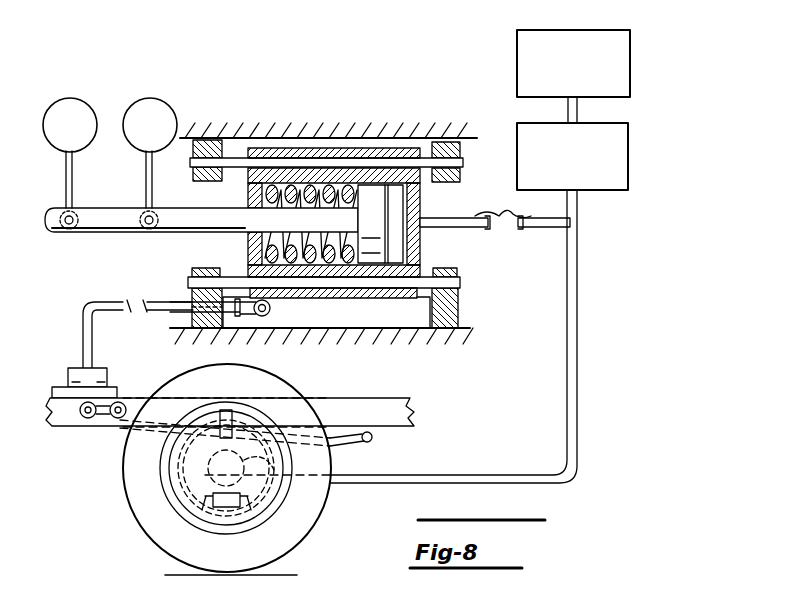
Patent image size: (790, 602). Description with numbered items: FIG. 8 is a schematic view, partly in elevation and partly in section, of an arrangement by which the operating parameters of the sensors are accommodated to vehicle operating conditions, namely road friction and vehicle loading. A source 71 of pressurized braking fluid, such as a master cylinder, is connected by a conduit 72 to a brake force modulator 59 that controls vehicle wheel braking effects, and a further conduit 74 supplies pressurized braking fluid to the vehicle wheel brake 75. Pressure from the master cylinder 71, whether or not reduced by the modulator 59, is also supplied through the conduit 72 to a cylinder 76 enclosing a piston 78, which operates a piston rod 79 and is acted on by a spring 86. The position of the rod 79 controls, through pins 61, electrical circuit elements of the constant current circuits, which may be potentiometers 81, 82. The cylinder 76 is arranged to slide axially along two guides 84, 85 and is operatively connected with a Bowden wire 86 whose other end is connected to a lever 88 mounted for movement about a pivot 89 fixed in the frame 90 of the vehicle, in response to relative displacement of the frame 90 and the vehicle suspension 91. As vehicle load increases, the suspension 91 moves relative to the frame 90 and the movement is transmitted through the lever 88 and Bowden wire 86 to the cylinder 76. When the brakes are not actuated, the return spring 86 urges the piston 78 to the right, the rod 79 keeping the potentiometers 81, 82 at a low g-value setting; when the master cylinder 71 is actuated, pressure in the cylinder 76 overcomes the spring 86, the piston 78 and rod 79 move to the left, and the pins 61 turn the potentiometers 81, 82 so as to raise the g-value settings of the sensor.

The brake force modulator 59 is at (517, 165).
The pins 61 is at (146, 180).
The source of pressurized braking fluid 71 is at (517, 65).
The conduit 72 is at (568, 110).
The conduit 74 is at (468, 228).
The vehicle wheel brake 75 is at (175, 494).
The cylinder 76 is at (332, 152).
The piston 78 is at (420, 195).
The piston rod 79 is at (198, 210).
The potentiometer 81 is at (164, 72).
The potentiometer 82 is at (52, 74).
The guide 84 is at (240, 150).
The guide 85 is at (232, 294).
The spring 86 is at (340, 194).
The lever 88 is at (180, 388).
The pivot 89 is at (97, 430).
The vehicle frame 90 is at (364, 402).
The vehicle suspension 91 is at (355, 440).